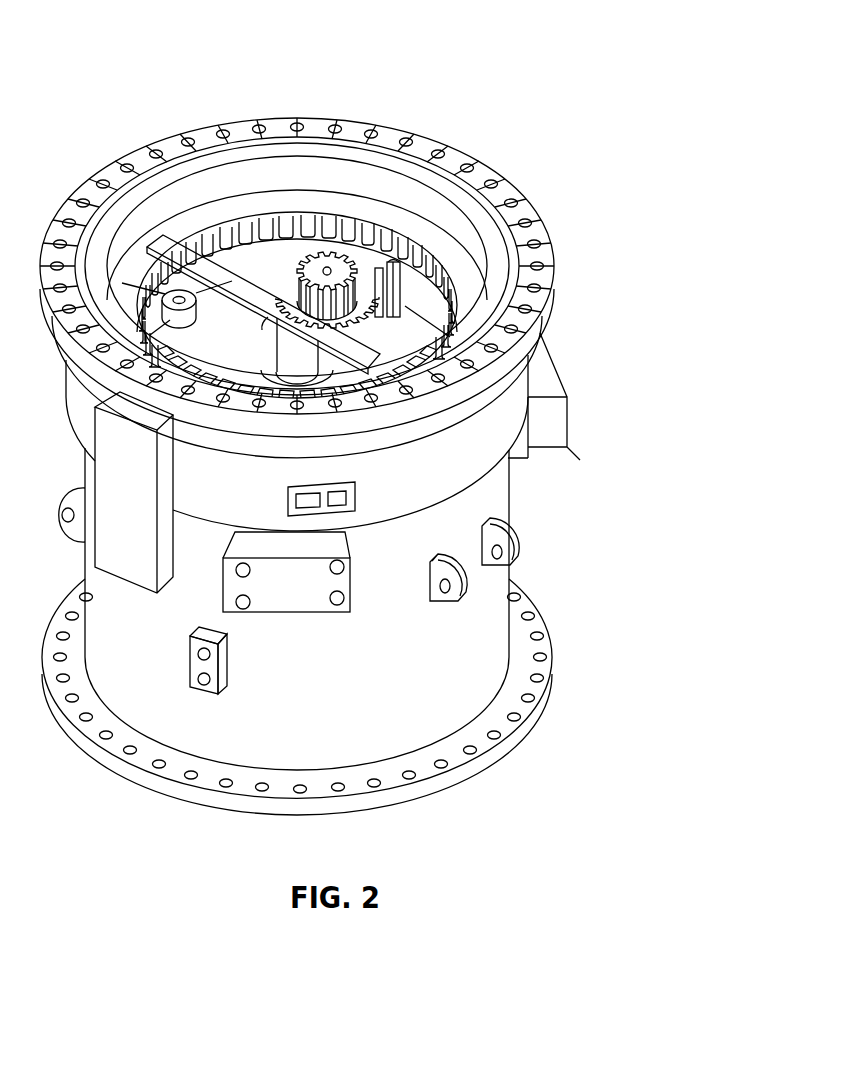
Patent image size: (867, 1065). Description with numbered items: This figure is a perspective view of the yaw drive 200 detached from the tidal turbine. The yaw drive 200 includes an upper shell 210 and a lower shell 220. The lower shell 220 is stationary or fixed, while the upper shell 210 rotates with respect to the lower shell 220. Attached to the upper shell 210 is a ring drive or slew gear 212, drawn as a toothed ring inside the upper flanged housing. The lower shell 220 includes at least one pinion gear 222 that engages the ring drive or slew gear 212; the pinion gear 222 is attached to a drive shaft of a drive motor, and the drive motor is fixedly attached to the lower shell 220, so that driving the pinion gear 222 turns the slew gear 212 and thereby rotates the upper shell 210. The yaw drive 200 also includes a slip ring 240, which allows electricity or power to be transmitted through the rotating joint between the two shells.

The yaw drive 200 is at (399, 417).
The upper shell 210 is at (513, 412).
The ring drive or slew gear 212 is at (258, 216).
The lower shell 220 is at (490, 660).
The pinion gear 222 is at (340, 262).
The slip ring 240 is at (270, 335).